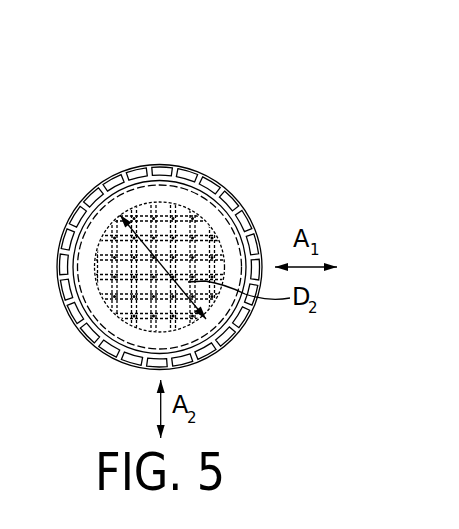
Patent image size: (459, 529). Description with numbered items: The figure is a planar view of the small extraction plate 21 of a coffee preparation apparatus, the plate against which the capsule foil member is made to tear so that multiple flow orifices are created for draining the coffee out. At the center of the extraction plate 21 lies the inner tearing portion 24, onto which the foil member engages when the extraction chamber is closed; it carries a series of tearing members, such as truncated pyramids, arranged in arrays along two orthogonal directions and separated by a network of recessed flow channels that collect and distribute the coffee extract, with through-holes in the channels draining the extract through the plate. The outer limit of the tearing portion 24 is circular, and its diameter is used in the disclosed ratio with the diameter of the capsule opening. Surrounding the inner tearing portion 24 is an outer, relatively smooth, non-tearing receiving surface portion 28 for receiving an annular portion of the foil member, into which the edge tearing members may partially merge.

The extraction plate 21 is at (107, 160).
The inner tearing portion 24 is at (191, 202).
The non-tearing receiving surface portion 28 is at (163, 191).